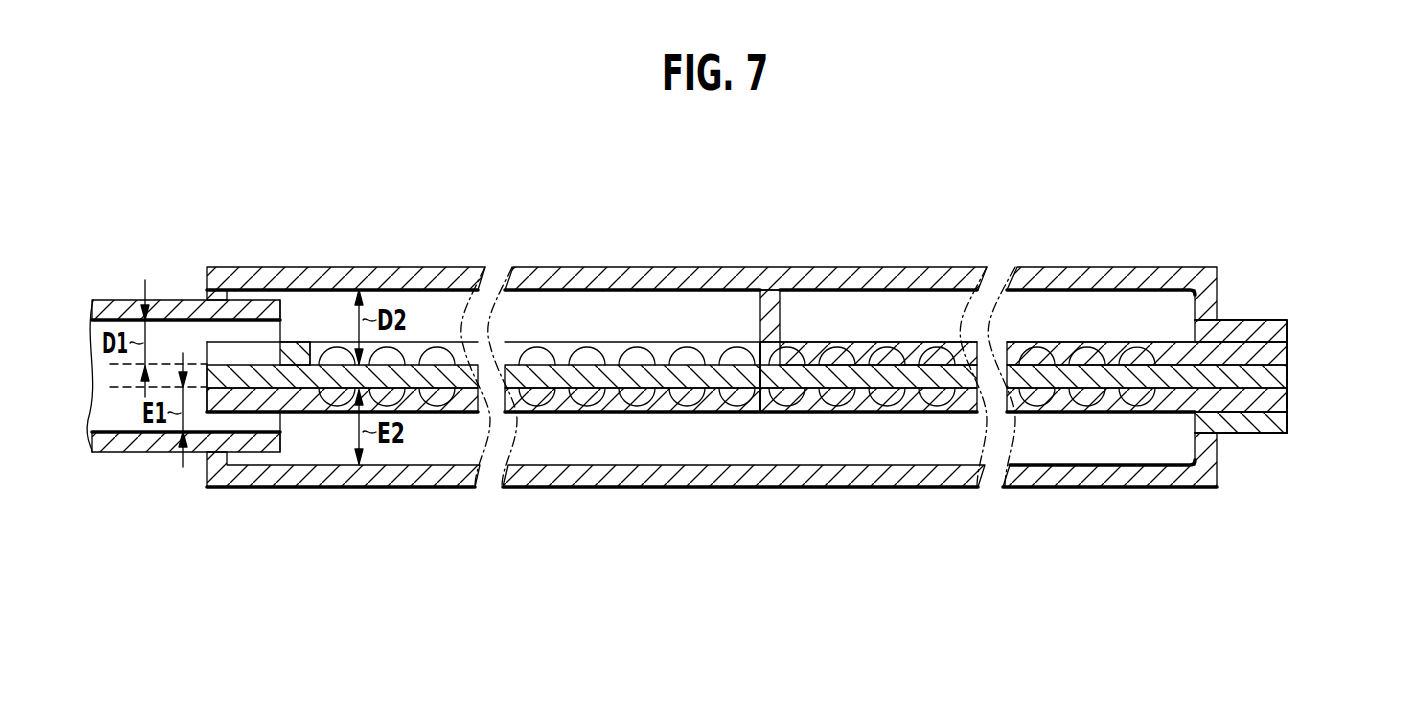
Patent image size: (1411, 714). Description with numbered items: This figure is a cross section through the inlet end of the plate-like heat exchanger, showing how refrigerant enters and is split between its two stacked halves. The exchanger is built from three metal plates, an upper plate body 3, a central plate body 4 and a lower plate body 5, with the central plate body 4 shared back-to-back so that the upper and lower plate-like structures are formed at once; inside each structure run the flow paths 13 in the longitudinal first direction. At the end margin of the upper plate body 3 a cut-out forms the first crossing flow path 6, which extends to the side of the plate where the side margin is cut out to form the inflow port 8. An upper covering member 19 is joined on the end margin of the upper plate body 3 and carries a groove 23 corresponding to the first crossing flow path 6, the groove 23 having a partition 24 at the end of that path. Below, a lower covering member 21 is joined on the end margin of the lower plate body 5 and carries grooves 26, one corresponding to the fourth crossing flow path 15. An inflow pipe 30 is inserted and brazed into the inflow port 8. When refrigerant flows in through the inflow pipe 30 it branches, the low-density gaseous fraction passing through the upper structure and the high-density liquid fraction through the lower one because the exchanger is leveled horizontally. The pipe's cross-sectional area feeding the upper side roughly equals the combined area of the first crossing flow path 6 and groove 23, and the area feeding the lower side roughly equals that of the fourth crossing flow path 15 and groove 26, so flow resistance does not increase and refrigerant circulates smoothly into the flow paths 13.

The upper plate body 3 is at (1290, 345).
The central plate body 4 is at (1290, 378).
The lower plate body 5 is at (1290, 405).
The first crossing flow path 6 is at (413, 350).
The inflow port 8 is at (250, 327).
The flow paths 13 is at (637, 357).
The fourth crossing flow path 15 is at (905, 405).
The upper covering member 19 is at (712, 268).
The lower covering member 21 is at (712, 528).
The groove 23 is at (898, 292).
The partition 24 is at (795, 300).
The grooves 26 is at (420, 464).
The inflow pipe 30 is at (120, 300).